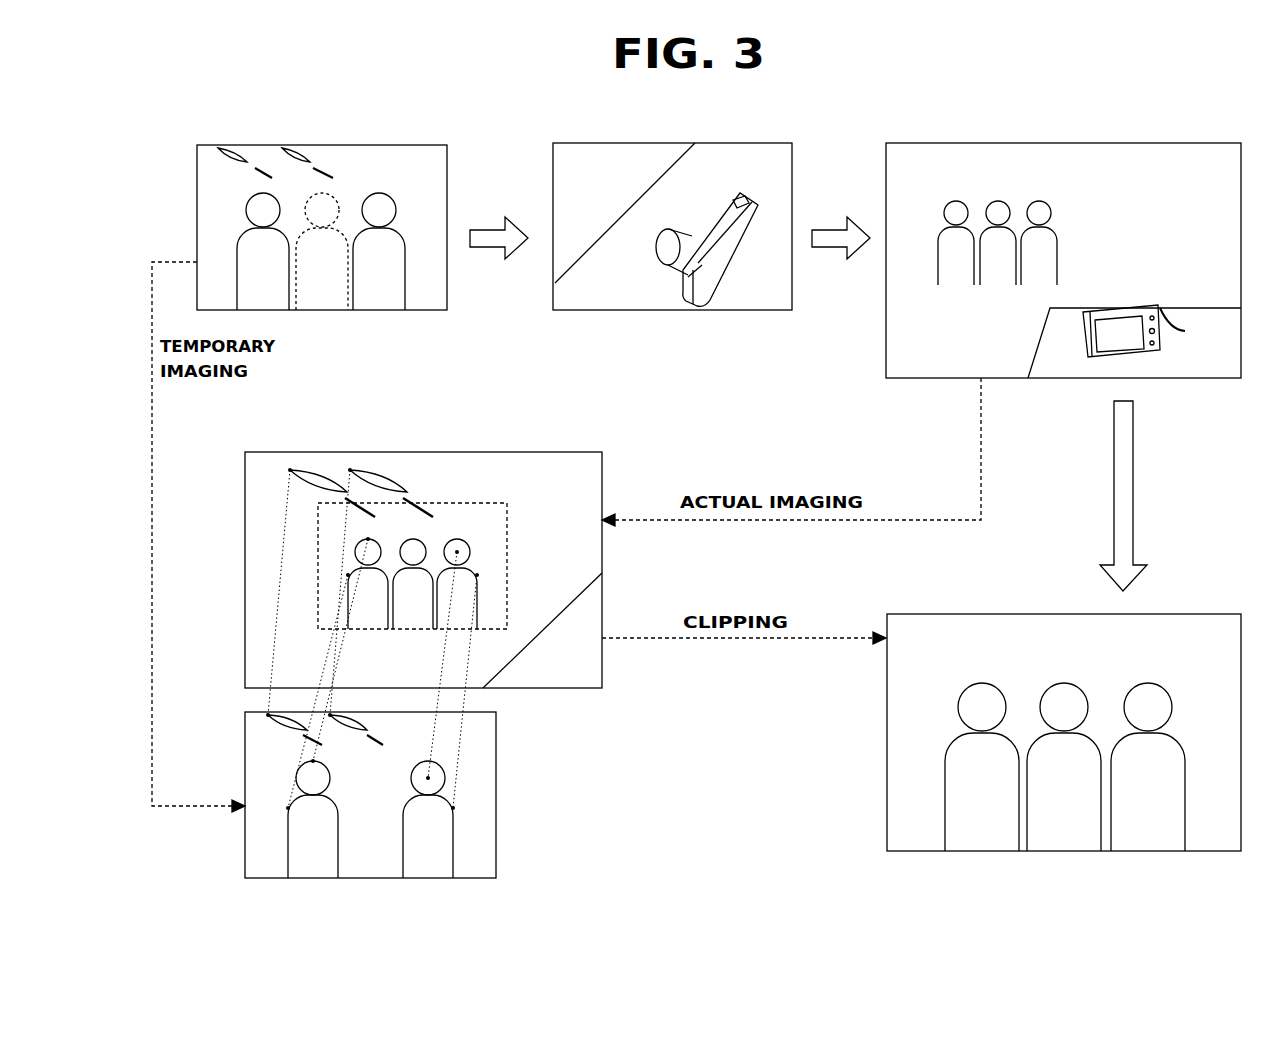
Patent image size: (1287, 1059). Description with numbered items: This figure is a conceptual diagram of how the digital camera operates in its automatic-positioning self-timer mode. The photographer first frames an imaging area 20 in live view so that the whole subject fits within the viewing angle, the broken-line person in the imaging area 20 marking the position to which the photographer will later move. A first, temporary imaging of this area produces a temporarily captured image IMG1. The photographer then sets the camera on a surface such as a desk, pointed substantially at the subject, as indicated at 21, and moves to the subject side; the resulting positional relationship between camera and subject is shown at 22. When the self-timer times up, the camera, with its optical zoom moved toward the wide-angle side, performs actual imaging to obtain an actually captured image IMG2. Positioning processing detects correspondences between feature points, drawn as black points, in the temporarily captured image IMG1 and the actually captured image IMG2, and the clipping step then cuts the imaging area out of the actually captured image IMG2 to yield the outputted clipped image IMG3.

The imaging area 20 is at (448, 147).
The digital camera setting 21 is at (793, 147).
The positional relationship between digital camera and photographic subject 22 is at (1243, 147).
The temporarily captured image IMG1 is at (517, 713).
The actually captured image IMG2 is at (612, 447).
The clipped image IMG3 is at (1181, 614).